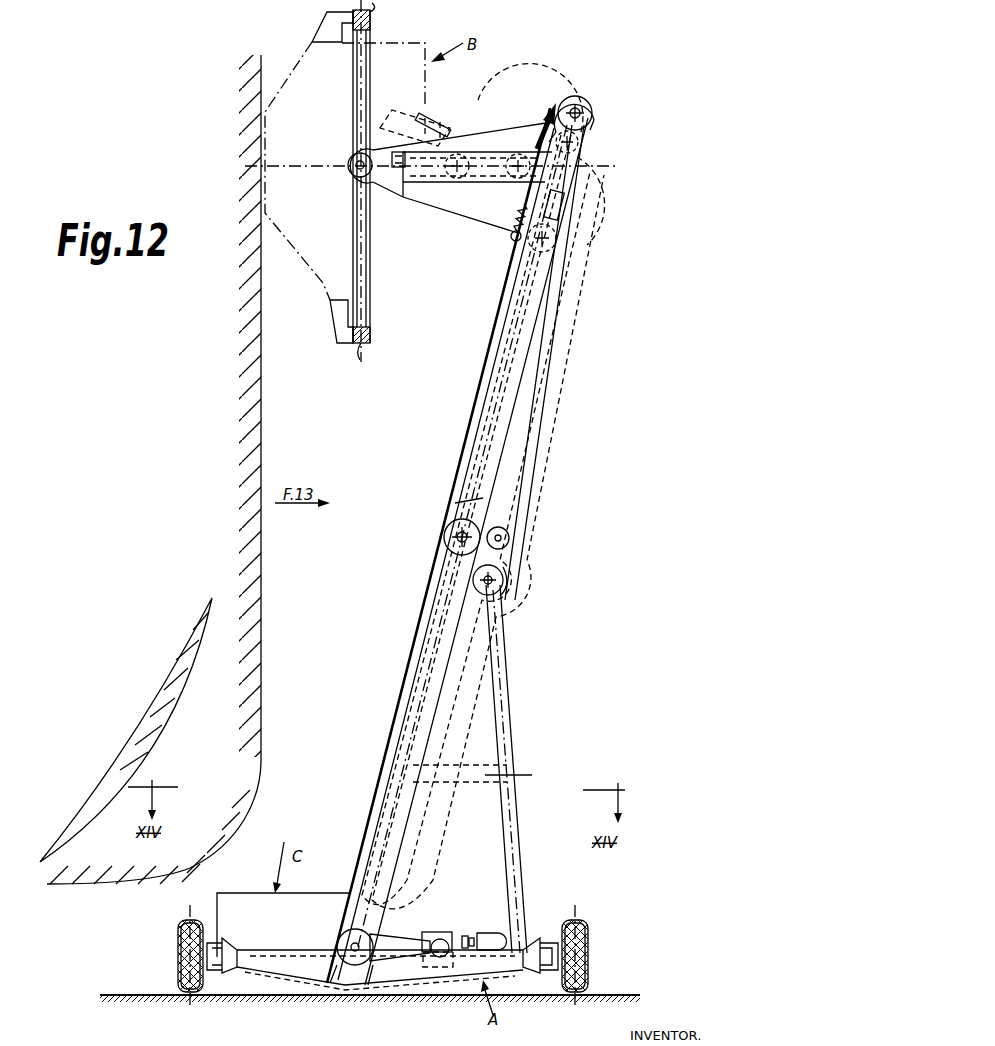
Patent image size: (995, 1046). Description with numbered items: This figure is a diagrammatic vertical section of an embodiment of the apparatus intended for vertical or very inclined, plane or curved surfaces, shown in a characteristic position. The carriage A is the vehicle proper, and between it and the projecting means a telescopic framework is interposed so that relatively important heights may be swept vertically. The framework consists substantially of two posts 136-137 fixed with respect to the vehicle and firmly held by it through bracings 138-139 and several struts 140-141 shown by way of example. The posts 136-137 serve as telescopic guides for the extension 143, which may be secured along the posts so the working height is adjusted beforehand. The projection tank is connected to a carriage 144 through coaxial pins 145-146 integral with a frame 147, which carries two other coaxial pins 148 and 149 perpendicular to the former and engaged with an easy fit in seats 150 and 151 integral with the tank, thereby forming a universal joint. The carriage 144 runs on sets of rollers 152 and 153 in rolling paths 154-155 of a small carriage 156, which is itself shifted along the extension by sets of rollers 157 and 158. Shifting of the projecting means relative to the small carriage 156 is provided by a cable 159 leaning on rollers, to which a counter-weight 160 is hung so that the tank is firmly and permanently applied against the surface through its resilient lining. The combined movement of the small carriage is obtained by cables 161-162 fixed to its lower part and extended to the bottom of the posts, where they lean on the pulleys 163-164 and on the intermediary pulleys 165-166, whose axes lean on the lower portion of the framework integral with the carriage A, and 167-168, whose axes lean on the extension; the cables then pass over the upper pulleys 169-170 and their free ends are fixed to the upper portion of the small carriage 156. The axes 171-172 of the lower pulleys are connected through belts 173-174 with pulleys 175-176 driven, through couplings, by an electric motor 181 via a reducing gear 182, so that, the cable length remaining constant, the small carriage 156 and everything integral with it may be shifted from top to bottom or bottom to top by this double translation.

The extension 143 is at (517, 377).
The carriage 144 is at (405, 203).
The coaxial pins 145-146 is at (356, 170).
The frame 147 is at (352, 103).
The coaxial pin 148 is at (372, 8).
The coaxial pin 149 is at (369, 352).
The seat 150 is at (322, 33).
The seat 151 is at (337, 332).
The set of rollers 152 is at (456, 180).
The set of rollers 153 is at (516, 180).
The rolling paths 154-155 is at (488, 150).
The small carriage 156 is at (535, 127).
The set of rollers 157 is at (580, 146).
The set of rollers 158 is at (560, 239).
The cable 159 is at (468, 147).
The counter-weight 160 is at (565, 209).
The cables 161-162 is at (522, 497).
The pulleys 163-164 is at (348, 984).
The intermediary pulleys 165-166 is at (440, 548).
The intermediary pulleys 167-168 is at (505, 586).
The upper pulleys 169-170 is at (586, 104).
The axes 171-172 is at (348, 945).
The belts 173-174 is at (397, 937).
The pulleys 175-176 is at (440, 958).
The electric motor 181 is at (500, 936).
The reducing gear 182 is at (452, 935).
The posts 136-137 is at (388, 792).
The bracings 138-139 is at (512, 678).
The struts 140-141 is at (470, 783).
The carriage A is at (380, 970).